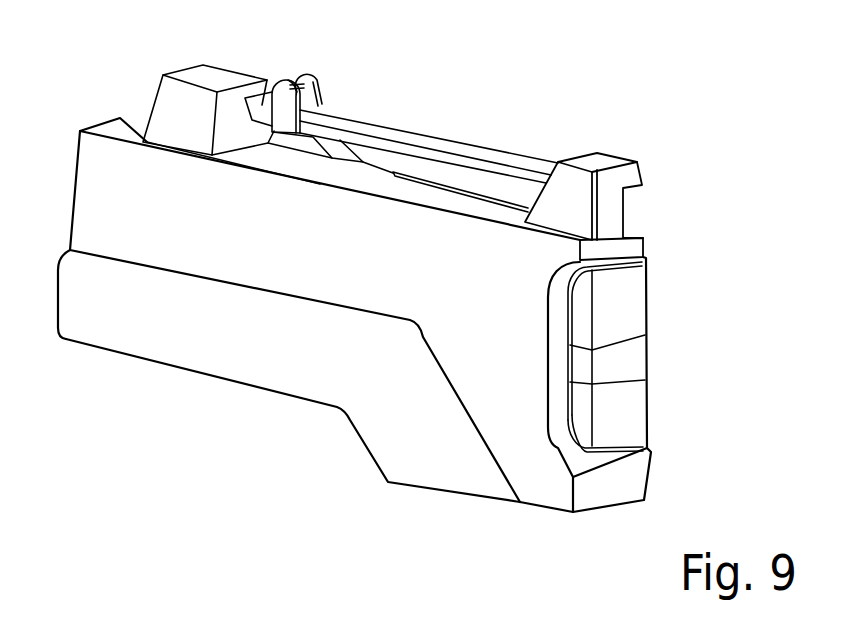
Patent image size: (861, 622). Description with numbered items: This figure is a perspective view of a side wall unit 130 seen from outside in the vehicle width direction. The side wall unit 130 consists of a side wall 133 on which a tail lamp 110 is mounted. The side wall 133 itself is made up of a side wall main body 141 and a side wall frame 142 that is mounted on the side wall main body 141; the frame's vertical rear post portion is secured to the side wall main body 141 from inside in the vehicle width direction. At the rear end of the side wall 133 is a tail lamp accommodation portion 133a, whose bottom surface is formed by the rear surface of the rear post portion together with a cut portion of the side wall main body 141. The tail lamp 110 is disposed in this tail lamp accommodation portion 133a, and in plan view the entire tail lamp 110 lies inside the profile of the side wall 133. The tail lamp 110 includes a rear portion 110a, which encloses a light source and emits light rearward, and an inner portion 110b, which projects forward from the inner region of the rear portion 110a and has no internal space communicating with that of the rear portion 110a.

The side wall unit 130 is at (715, 142).
The side wall 133 is at (612, 79).
The side wall frame 142 is at (488, 148).
The side wall main body 141 is at (588, 160).
The tail lamp 110 is at (636, 305).
The rear portion 110a is at (622, 415).
The inner portion 110b is at (583, 413).
The tail lamp accommodation portion 133a is at (565, 363).